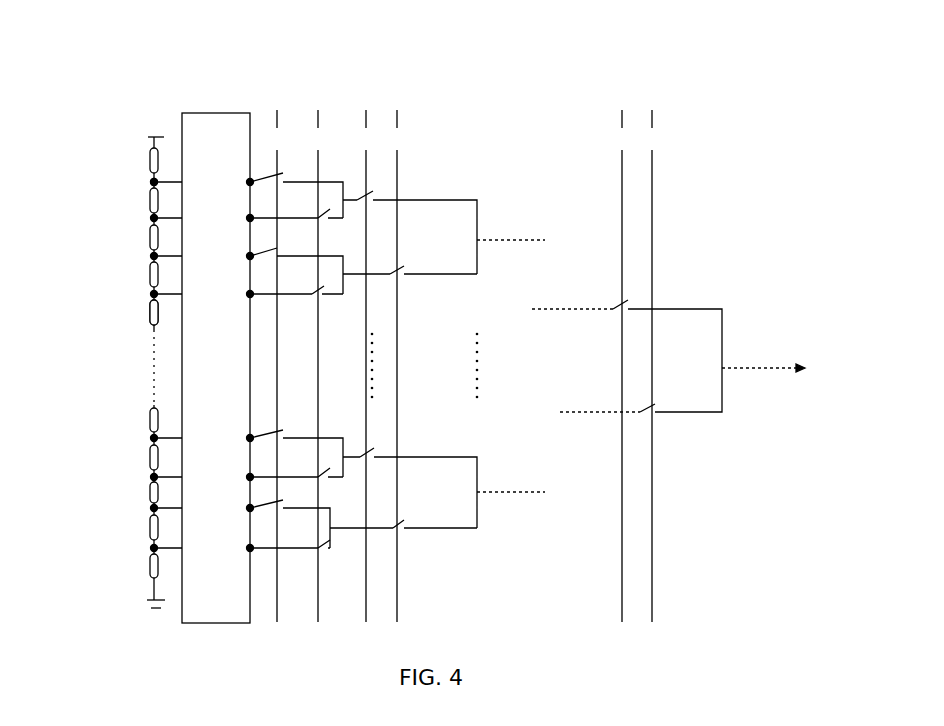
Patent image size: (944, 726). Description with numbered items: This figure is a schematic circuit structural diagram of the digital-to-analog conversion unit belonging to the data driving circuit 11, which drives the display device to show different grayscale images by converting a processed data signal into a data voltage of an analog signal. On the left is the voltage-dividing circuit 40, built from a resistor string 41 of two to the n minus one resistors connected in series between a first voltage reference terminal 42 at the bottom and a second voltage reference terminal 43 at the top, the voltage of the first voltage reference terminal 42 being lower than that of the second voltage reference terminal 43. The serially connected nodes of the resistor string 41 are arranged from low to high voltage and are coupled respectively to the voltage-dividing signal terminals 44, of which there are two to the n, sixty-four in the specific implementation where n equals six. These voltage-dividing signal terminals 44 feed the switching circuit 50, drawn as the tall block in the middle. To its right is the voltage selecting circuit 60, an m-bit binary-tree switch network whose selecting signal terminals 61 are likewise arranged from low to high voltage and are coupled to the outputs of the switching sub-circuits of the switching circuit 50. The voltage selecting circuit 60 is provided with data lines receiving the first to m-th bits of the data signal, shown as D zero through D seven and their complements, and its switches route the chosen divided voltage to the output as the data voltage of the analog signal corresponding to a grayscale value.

The data driving circuit 11 is at (399, 27).
The voltage-dividing circuit 40 is at (86, 251).
The resistor string 41 is at (147, 327).
The first voltage reference terminal 42 is at (147, 605).
The second voltage reference terminal 43 is at (148, 137).
The voltage-dividing signal terminals 44 is at (139, 182).
The switching circuit 50 is at (216, 368).
The voltage selecting circuit 60 is at (506, 97).
The selecting signal terminals 61 is at (285, 181).